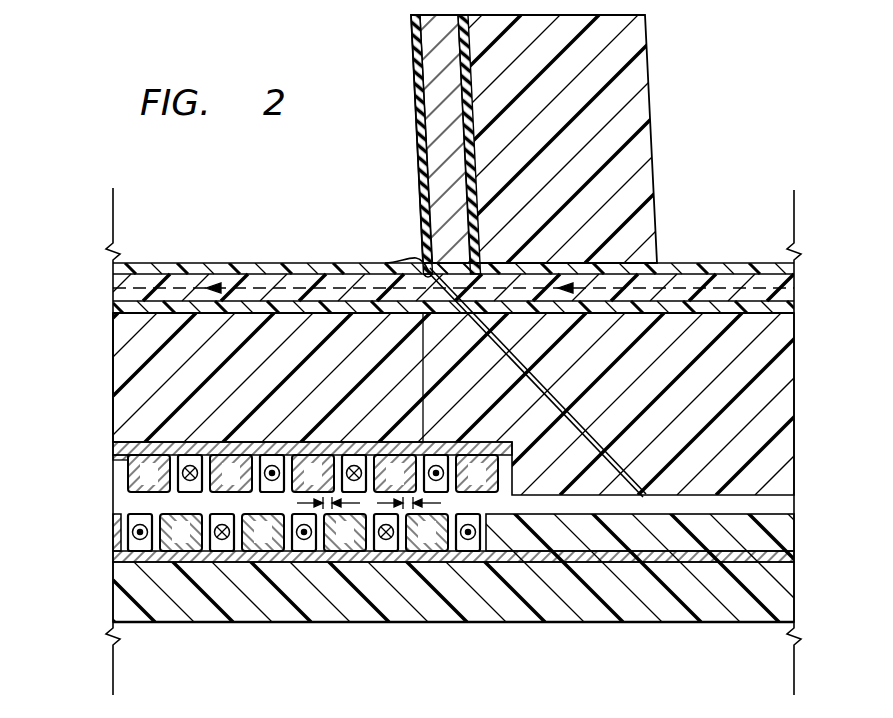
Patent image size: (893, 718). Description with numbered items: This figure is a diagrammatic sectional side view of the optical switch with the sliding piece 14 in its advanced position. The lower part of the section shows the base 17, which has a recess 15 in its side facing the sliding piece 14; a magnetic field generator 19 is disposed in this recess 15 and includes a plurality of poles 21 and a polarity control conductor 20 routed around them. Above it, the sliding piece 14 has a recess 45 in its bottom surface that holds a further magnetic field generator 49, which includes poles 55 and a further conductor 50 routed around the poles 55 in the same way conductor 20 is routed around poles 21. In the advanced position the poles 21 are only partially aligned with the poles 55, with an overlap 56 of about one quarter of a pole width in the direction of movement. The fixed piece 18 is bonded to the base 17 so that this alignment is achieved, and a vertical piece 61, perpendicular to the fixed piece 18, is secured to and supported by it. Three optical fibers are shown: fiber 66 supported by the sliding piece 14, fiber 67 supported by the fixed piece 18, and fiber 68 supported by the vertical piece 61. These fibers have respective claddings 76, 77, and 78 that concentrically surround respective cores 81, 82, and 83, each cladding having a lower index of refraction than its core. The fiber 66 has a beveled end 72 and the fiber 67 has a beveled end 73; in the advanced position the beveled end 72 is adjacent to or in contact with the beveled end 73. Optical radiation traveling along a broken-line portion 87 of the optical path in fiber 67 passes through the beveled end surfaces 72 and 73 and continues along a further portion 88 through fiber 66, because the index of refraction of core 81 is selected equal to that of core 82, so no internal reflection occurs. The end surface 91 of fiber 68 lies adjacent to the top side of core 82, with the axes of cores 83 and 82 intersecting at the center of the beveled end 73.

The vertical piece 61 is at (651, 99).
The optical fiber 68 is at (414, 52).
The cladding 78 is at (420, 84).
The core 83 is at (437, 145).
The optical fiber 66 is at (160, 263).
The optical fiber 67 is at (683, 264).
The cladding 76 is at (220, 272).
The cladding 77 is at (768, 270).
The portion of optical path 88 is at (268, 285).
The portion of optical path 87 is at (684, 290).
The core 81 is at (113, 281).
The core 82 is at (795, 313).
The sliding piece 14 is at (113, 336).
The fixed piece 18 is at (795, 420).
The beveled end 72 is at (412, 262).
The beveled end 73 is at (435, 262).
The end surface 91 is at (478, 265).
The recess 45 is at (498, 450).
The magnetic field generator 49 is at (270, 467).
The conductor 50 is at (188, 442).
The poles 55 is at (232, 494).
The magnetic field generator 19 is at (403, 587).
The polarity control conductor 20 is at (130, 532).
The poles 21 is at (160, 563).
The overlap 56 is at (307, 505).
The recess 15 is at (516, 551).
The base 17 is at (640, 623).